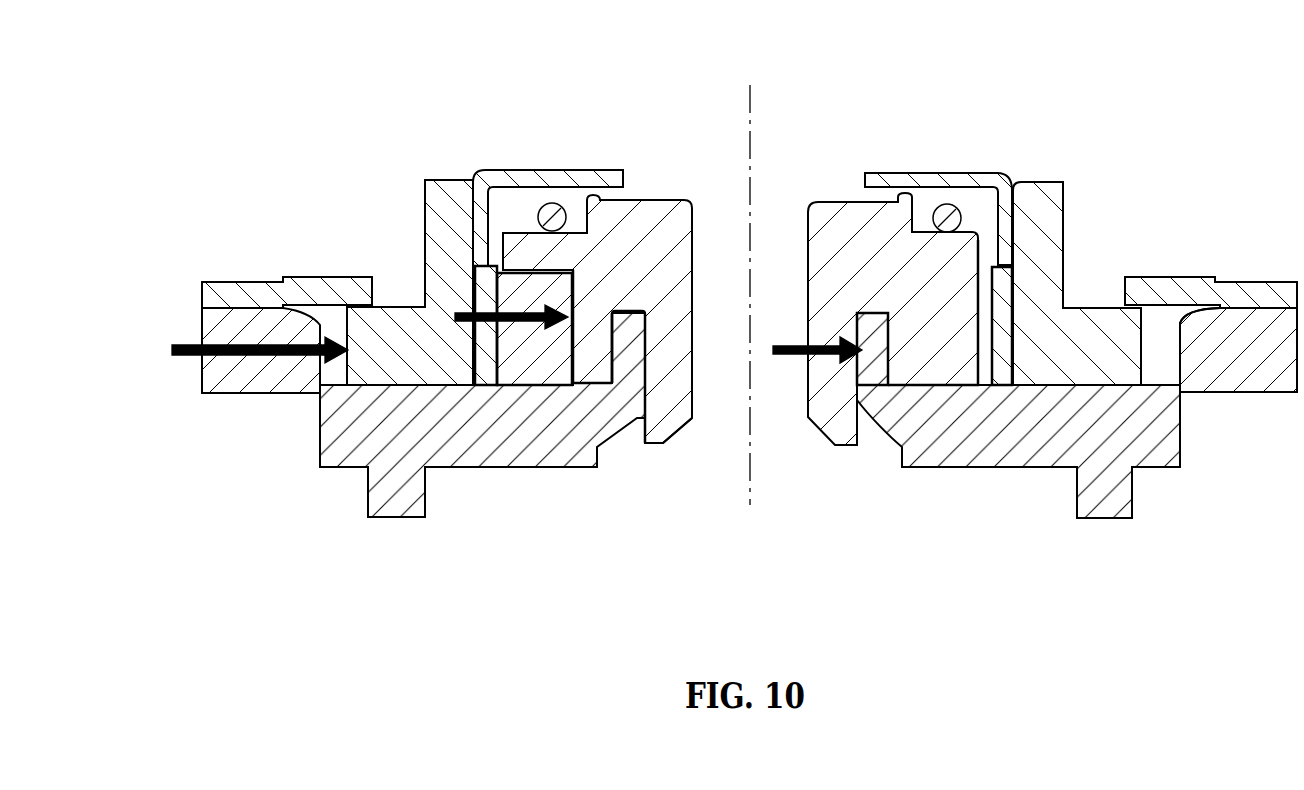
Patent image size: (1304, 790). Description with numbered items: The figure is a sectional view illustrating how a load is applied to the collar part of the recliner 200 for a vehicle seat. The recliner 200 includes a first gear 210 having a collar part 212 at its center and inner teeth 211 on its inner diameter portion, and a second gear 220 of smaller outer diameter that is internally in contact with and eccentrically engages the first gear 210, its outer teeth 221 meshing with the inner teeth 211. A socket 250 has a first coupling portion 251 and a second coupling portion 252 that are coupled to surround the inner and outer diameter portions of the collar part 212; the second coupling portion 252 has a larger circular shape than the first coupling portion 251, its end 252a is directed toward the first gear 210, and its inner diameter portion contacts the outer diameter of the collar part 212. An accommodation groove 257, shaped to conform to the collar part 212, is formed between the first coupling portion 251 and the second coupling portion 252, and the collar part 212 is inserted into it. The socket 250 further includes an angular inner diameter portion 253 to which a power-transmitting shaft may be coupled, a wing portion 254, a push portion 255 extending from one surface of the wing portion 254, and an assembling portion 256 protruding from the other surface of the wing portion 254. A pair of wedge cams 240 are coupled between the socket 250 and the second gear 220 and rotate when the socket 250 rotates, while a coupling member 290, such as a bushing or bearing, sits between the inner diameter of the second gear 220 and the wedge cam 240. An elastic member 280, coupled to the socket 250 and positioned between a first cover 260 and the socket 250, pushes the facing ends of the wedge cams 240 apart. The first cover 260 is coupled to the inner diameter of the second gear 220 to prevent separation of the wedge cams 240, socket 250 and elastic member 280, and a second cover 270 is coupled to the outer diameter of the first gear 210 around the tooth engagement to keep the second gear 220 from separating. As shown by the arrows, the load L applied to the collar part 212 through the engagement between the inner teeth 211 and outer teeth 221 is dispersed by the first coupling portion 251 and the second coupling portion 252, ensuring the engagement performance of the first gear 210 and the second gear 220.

The recliner 200 is at (585, 60).
The load L is at (188, 343).
The first gear 210 is at (1010, 448).
The inner teeth 211 is at (1177, 350).
The collar part 212 is at (877, 360).
The second gear 220 is at (1053, 343).
The outer teeth 221 is at (1152, 342).
The wedge cam 240 is at (522, 357).
The socket 250 is at (826, 190).
The first coupling portion 251 is at (670, 402).
The second coupling portion 252 is at (593, 348).
The end of the second coupling portion 252a is at (615, 358).
The inner diameter portion 253 is at (693, 248).
The wing portion 254 is at (527, 252).
The push portion 255 is at (947, 325).
The assembling portion 256 is at (580, 208).
The accommodation groove 257 is at (643, 357).
The first cover 260 is at (885, 173).
The second cover 270 is at (1250, 290).
The elastic member 280 is at (947, 204).
The coupling member 290 is at (487, 365).